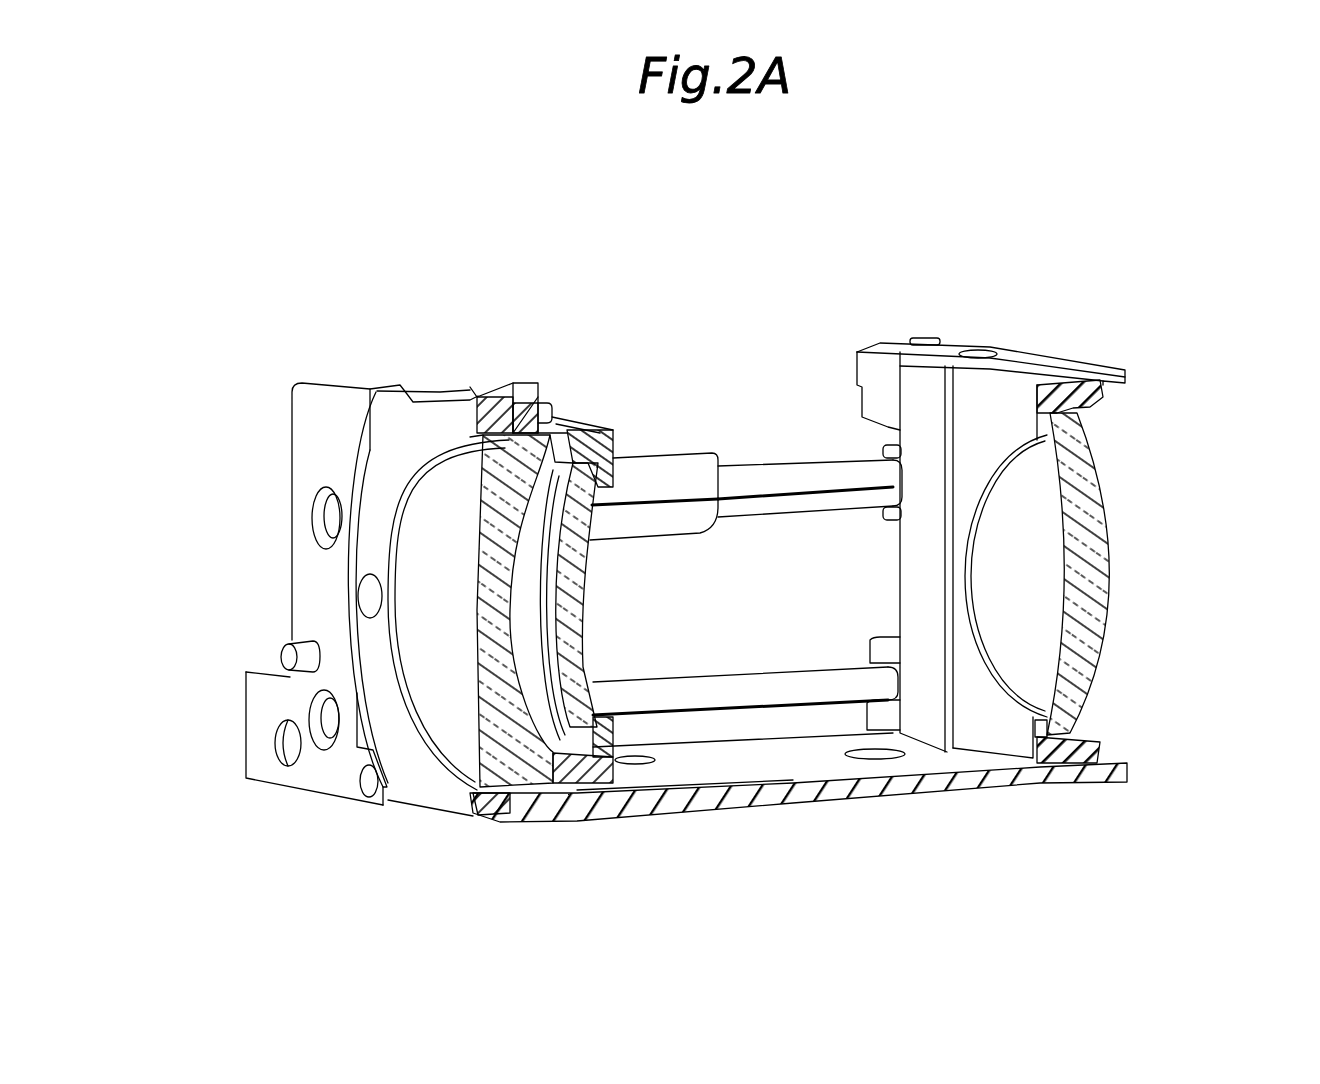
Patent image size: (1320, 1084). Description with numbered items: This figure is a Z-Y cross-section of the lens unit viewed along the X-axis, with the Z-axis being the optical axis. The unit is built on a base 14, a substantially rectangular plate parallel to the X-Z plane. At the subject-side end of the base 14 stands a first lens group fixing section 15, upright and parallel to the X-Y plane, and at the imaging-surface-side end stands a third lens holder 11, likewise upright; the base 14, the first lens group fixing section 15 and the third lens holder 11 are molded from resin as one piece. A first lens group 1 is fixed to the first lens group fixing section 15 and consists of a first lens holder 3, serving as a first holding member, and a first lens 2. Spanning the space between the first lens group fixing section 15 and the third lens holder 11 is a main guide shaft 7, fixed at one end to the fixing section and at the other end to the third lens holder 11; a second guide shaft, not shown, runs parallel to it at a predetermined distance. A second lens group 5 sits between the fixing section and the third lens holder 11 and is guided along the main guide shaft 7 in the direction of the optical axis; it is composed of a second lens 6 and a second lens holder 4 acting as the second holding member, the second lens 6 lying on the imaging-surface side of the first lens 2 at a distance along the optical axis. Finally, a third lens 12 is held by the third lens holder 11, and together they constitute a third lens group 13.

The first lens group 1 is at (215, 283).
The first lens 2 is at (437, 547).
The first lens holder 3 is at (410, 445).
The second lens holder 4 is at (573, 455).
The second lens group 5 is at (740, 247).
The second lens 6 is at (597, 470).
The main guide shaft 7 is at (787, 470).
The third lens holder 11 is at (1085, 382).
The third lens 12 is at (1083, 545).
The third lens group 13 is at (1200, 233).
The base 14 is at (948, 790).
The first lens group fixing section 15 is at (525, 395).